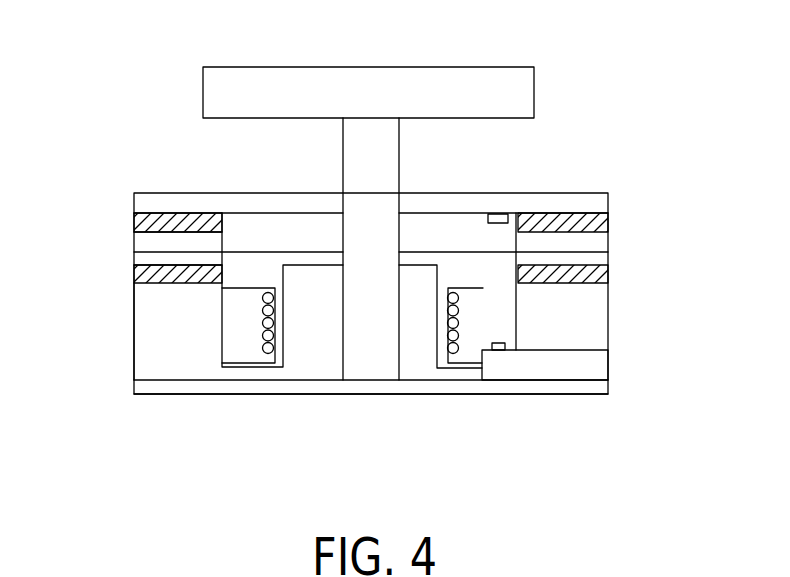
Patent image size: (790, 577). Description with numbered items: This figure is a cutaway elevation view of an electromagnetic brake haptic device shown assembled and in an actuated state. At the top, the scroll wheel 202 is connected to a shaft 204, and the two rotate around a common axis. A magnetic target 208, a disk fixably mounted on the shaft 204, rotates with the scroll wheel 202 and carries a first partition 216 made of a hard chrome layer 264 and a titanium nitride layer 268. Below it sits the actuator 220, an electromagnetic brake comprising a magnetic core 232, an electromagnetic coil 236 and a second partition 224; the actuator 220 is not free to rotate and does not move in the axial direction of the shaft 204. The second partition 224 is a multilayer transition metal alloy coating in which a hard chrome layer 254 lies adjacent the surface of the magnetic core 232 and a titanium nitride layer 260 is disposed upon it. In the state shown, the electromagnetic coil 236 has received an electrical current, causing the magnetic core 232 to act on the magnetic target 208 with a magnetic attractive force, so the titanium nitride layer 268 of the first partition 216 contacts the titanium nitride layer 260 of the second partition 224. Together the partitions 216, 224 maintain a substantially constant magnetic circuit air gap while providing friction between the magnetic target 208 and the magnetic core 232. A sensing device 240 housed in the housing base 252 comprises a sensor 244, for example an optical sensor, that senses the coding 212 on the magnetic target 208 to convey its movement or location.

The scroll wheel 202 is at (203, 88).
The shaft 204 is at (372, 369).
The magnetic target 208 is at (562, 193).
The coding 212 is at (498, 214).
The first partition 216 is at (612, 214).
The actuator 220 is at (106, 381).
The second partition 224 is at (612, 257).
The magnetic core 232 is at (160, 338).
The electromagnetic coil 236 is at (238, 313).
The sensing device 240 is at (592, 362).
The sensor 244 is at (498, 343).
The housing base 252 is at (596, 390).
The hard chrome layer 254 is at (132, 275).
The titanium nitride layer 260 is at (132, 259).
The hard chrome layer 264 is at (132, 219).
The titanium nitride layer 268 is at (132, 242).